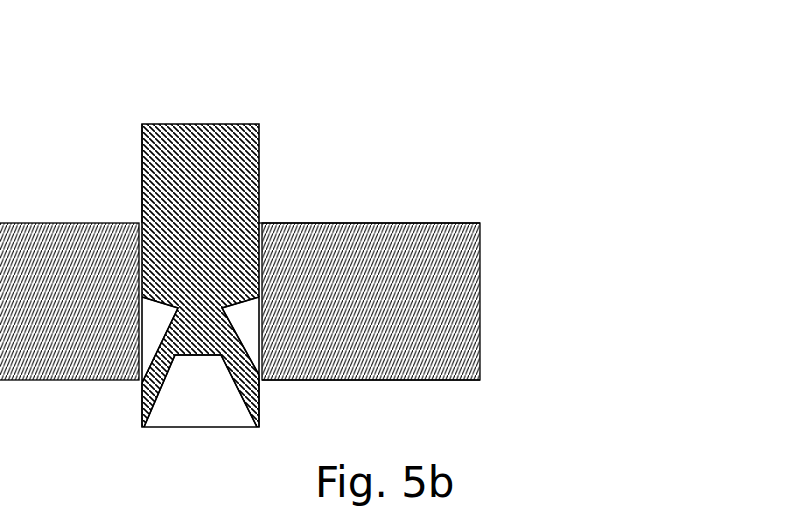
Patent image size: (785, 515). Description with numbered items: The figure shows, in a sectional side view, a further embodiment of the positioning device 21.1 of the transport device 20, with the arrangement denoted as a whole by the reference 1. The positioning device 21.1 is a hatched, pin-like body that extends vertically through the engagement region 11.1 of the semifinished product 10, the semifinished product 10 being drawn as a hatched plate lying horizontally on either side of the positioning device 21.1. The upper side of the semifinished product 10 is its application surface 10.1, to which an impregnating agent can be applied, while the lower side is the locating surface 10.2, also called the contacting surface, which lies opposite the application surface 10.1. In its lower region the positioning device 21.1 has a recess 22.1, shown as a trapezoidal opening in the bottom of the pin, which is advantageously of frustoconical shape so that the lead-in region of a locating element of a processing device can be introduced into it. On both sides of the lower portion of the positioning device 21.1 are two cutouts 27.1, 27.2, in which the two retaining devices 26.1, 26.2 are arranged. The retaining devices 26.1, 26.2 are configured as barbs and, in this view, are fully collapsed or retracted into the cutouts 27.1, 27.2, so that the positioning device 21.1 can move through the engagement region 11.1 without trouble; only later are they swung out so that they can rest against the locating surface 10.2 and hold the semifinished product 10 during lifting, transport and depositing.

The connection arrangement 1 is at (7, 58).
The semifinished product 10 is at (390, 222).
The application surface 10.1 is at (415, 218).
The locating surface 10.2 is at (412, 380).
The engagement region 11.1 is at (262, 214).
The transport device 20 is at (217, 89).
The positioning device 21.1 is at (142, 173).
The recess 22.1 is at (187, 424).
The retaining device 26.1 is at (275, 380).
The retaining device 26.2 is at (117, 382).
The cutout 27.1 is at (263, 393).
The cutout 27.2 is at (140, 382).